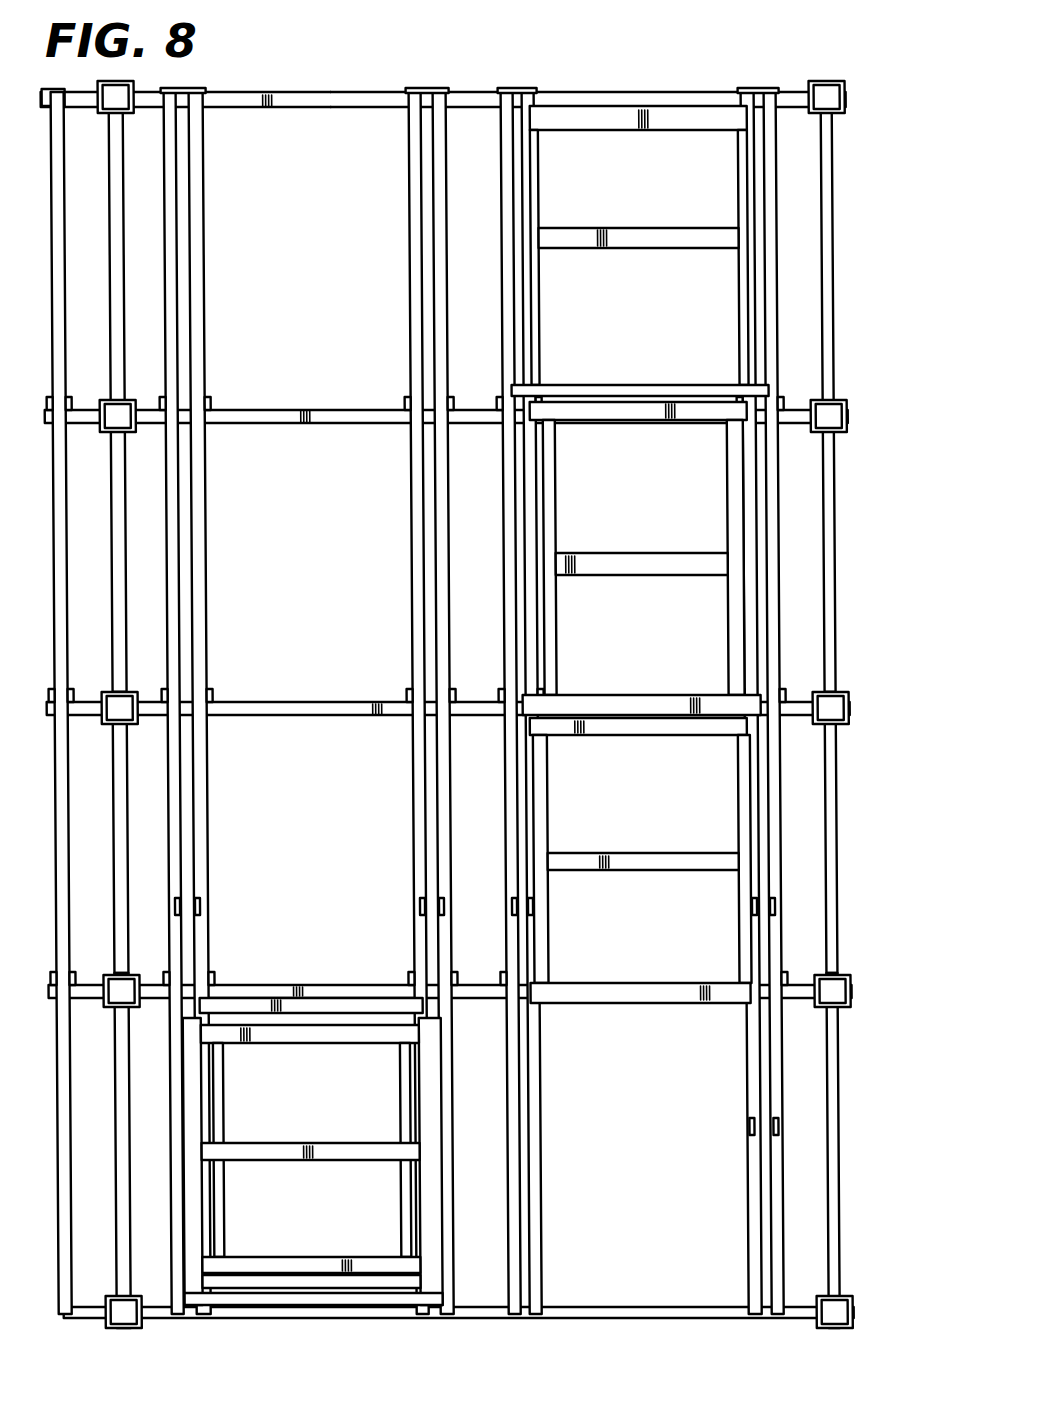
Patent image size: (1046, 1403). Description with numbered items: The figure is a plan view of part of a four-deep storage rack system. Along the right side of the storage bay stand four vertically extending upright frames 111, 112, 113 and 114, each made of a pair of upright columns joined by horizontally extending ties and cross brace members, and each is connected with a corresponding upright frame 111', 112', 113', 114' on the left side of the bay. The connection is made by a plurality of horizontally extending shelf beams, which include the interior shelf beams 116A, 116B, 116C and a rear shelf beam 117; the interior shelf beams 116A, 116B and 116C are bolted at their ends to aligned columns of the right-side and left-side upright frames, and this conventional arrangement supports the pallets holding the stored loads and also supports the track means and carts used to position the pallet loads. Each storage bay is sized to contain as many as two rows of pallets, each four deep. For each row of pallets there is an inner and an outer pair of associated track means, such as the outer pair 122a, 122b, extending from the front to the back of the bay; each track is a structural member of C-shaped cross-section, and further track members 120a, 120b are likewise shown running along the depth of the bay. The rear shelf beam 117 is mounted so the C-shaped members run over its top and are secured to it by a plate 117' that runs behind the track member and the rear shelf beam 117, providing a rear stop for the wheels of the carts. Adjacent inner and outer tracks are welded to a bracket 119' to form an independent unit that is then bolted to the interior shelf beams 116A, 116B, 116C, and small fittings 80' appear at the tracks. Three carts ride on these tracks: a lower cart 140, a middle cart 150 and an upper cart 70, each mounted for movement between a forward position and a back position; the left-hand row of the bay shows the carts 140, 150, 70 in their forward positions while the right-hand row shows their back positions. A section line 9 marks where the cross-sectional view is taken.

The upper cart 70 is at (778, 243).
The middle cart 150 is at (752, 508).
The lower cart 140 is at (752, 800).
The clip 80' is at (232, 893).
The section line 9- 9 is at (276, 935).
The upright frame 111 is at (873, 1150).
The upright frame 112 is at (867, 832).
The upright frame 113 is at (868, 547).
The upright frame 114 is at (865, 242).
The upright frame 111' is at (217, 1150).
The upright frame 112' is at (206, 832).
The upright frame 113' is at (202, 547).
The upright frame 114' is at (200, 242).
The interior shelf beam 116A is at (360, 990).
The interior shelf beam 116B is at (378, 663).
The interior shelf beam 116C is at (367, 372).
The rear shelf beam 117 is at (588, 72).
The plate 117' is at (186, 72).
The bracket tab 119' is at (257, 663).
The upright post 120a is at (203, 155).
The upright post 120b is at (410, 190).
The track means 122a is at (173, 290).
The track means 122b is at (440, 232).